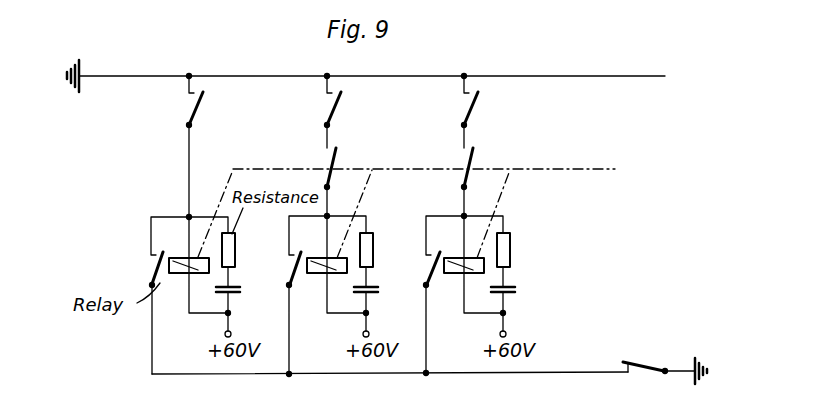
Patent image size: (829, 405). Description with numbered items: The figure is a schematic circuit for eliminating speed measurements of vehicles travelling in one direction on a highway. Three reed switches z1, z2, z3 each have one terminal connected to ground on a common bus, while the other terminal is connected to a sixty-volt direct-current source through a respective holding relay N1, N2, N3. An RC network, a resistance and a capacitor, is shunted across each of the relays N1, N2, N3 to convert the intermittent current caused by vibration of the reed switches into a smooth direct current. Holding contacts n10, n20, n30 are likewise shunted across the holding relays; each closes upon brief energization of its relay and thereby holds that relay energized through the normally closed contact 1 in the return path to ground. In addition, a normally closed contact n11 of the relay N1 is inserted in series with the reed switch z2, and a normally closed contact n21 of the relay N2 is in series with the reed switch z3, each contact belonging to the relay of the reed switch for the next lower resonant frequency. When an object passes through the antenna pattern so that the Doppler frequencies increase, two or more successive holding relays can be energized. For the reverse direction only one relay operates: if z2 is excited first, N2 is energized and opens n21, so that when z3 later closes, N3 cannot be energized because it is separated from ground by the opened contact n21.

The normally closed contact 1 is at (659, 341).
The reed switch z1 is at (221, 104).
The reed switch z2 is at (359, 104).
The reed switch z3 is at (496, 104).
The normally closed contact n11 is at (364, 159).
The normally closed contact n21 is at (501, 159).
The holding contact n10 is at (151, 259).
The holding contact n20 is at (294, 259).
The holding contact n30 is at (433, 259).
The holding relay N1 is at (191, 277).
The holding relay N2 is at (330, 277).
The holding relay N3 is at (468, 277).